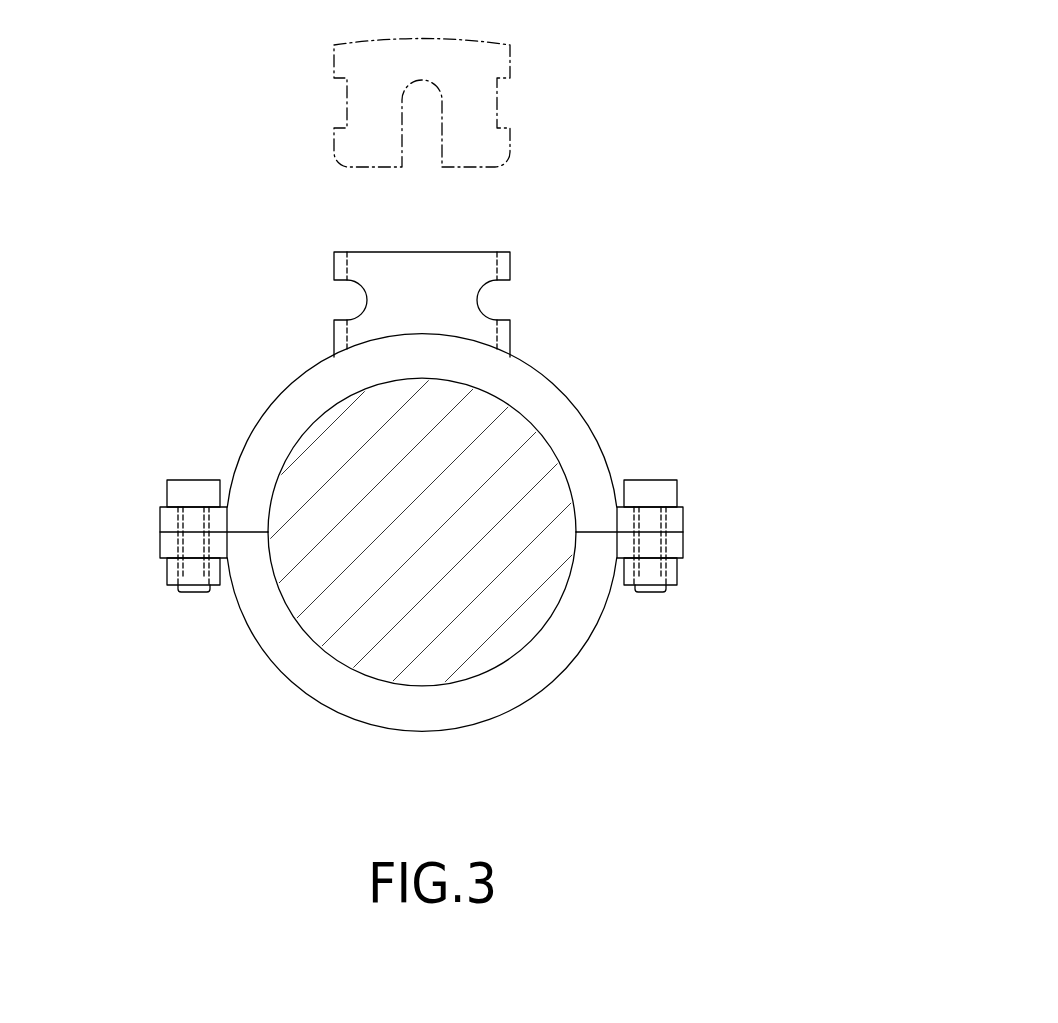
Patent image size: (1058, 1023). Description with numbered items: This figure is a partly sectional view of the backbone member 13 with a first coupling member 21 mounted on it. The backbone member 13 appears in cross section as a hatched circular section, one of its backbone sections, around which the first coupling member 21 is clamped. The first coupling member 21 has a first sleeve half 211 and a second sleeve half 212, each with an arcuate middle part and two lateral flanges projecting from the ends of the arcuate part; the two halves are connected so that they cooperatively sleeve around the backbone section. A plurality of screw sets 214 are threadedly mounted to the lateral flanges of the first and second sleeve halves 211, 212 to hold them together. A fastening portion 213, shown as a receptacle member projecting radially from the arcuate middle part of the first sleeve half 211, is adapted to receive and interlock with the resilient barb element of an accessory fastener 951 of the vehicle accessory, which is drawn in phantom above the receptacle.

The accessory fastener 951 is at (497, 114).
The first coupling member 21 is at (421, 486).
The first sleeve half 211 is at (532, 370).
The second sleeve half 212 is at (587, 640).
The fastening portion 213 is at (510, 265).
The screw sets 214 is at (167, 493).
The backbone member 13 is at (323, 625).